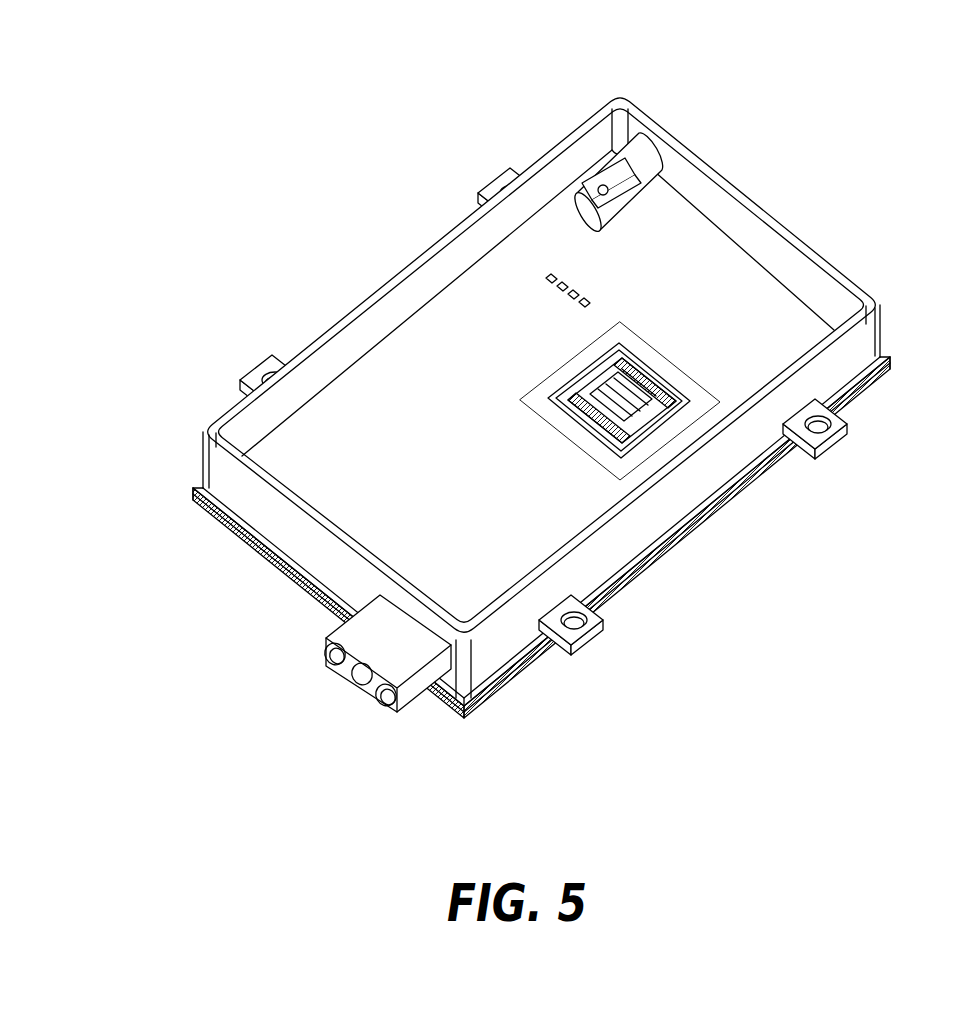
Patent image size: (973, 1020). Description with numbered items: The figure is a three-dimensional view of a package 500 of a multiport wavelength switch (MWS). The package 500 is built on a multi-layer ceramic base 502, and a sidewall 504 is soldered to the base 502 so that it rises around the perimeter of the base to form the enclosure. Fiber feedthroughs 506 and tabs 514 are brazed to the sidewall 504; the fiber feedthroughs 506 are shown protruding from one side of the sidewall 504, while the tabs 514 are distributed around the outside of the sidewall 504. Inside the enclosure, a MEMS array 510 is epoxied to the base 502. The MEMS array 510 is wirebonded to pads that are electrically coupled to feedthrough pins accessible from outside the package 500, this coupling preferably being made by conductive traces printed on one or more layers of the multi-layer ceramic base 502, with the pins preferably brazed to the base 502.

The package 500 is at (309, 158).
The multi-layer ceramic base 502 is at (441, 452).
The sidewall 504 is at (798, 237).
The fiber feedthroughs 506 is at (347, 677).
The MEMS array 510 is at (631, 358).
The tabs 514 is at (490, 181).